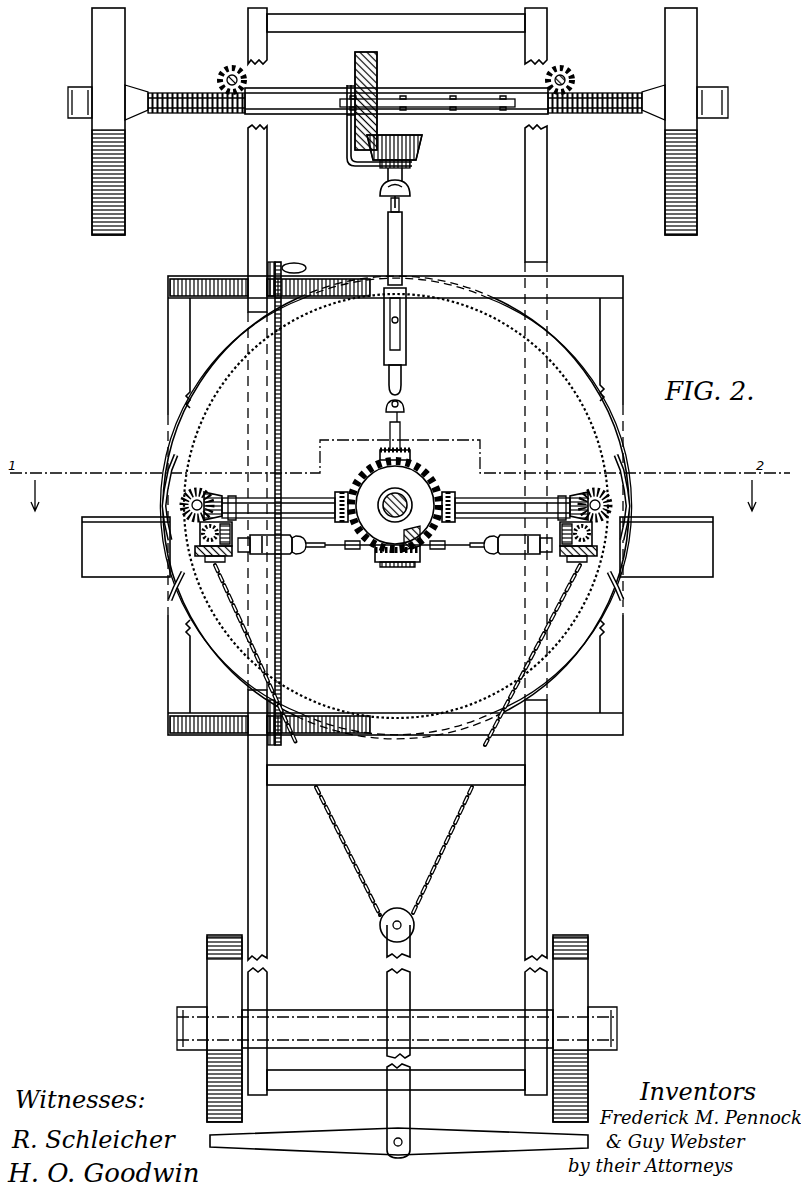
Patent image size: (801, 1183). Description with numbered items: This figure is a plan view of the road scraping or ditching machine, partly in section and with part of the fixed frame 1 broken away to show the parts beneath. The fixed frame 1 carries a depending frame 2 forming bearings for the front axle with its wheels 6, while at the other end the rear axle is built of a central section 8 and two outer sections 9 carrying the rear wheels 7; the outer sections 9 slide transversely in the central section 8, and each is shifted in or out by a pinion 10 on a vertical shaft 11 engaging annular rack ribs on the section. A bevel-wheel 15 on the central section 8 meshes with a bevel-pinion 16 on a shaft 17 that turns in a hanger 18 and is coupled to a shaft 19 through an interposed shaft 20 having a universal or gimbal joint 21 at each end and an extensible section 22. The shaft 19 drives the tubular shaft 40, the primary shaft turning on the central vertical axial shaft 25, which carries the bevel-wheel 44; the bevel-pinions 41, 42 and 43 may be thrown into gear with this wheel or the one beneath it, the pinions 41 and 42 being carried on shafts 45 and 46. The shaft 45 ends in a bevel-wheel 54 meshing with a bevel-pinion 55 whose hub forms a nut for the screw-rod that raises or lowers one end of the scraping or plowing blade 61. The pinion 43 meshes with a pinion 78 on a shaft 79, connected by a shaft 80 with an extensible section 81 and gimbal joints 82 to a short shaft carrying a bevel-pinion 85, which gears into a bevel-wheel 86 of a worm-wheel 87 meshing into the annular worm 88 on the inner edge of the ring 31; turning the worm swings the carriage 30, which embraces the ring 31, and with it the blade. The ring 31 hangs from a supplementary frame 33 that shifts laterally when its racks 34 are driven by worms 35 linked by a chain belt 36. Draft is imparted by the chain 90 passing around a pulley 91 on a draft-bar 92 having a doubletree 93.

The fixed frame 1 is at (397, 551).
The depending frame 2 is at (397, 1029).
The wheels 6 is at (397, 1028).
The rear wheels 7 is at (398, 121).
The central section 8 is at (432, 92).
The outer sections 9 is at (395, 504).
The pinion 10 is at (396, 69).
The vertical shaft 11 is at (224, 80).
The bevel-wheel 15 is at (365, 62).
The bevel-pinion 16 is at (402, 148).
The shaft 17 is at (409, 176).
The hanger 18 is at (379, 134).
The shaft 19 is at (400, 436).
The interposed shaft 20 is at (402, 243).
The universal or gimbal joint 21 is at (410, 412).
The extensible section 22 is at (405, 326).
The central vertical axial shaft 25 is at (407, 507).
The carriage 30 is at (632, 490).
The ring 31 is at (395, 507).
The supplementary frame 33 is at (172, 342).
The racks 34 is at (232, 283).
The worms 35 is at (287, 503).
The chain belt 36 is at (287, 503).
The tubular shaft 40 is at (383, 502).
The bevel-pinion 41 is at (344, 494).
The bevel-pinion 42 is at (453, 496).
The bevel-pinion 43 is at (391, 560).
The bevel-wheel 44 is at (395, 505).
The shaft 45 is at (307, 503).
The shaft 46 is at (508, 503).
The bevel-wheel 54 is at (212, 496).
The bevel-pinion 55 is at (397, 498).
The scraping or plowing blade 61 is at (397, 547).
The pinion 78 is at (420, 552).
The shaft 79 is at (397, 552).
The shaft 80 is at (395, 549).
The extensible section 81 is at (395, 549).
The universal or gimbal joints 82 is at (395, 552).
The bevel-pinion 85 is at (234, 510).
The bevel-wheel 86 is at (396, 536).
The worm-wheel 87 is at (396, 556).
The annular worm 88 is at (396, 506).
The chain 90 is at (397, 655).
The pulley 91 is at (397, 912).
The draft-bar 92 is at (410, 990).
The doubletree 93 is at (399, 1141).